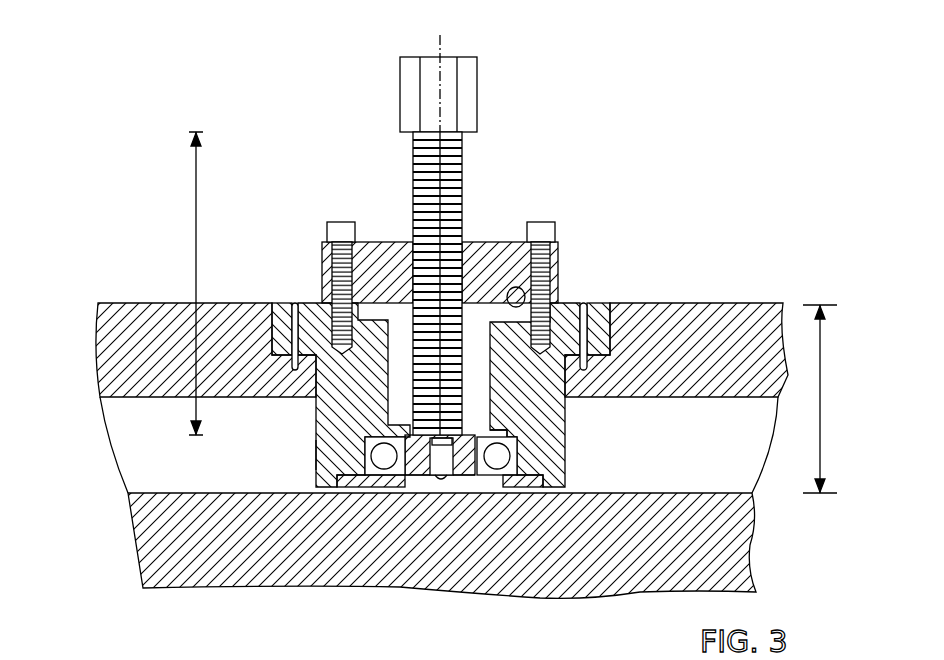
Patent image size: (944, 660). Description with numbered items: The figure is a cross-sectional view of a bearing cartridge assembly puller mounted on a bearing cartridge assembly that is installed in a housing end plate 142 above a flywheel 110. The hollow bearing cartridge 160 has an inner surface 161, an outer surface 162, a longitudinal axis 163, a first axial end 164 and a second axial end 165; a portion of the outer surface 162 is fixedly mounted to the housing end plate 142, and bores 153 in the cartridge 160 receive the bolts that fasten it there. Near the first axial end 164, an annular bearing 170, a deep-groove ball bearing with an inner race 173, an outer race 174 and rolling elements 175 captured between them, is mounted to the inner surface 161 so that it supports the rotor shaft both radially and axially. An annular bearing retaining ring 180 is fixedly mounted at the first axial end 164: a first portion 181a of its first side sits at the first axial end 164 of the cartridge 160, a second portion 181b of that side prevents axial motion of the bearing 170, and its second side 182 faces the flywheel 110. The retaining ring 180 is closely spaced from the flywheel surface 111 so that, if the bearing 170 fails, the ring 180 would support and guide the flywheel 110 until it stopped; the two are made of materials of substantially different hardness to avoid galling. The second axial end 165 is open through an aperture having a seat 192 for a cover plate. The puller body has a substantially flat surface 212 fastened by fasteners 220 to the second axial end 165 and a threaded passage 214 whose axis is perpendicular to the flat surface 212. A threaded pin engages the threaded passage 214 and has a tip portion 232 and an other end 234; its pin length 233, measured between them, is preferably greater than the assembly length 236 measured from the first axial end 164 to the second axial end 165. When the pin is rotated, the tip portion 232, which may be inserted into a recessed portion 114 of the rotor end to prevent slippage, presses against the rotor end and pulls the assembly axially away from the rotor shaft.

The flywheel 110 is at (740, 514).
The flywheel surface 111 is at (680, 488).
The recessed portion 114 is at (413, 477).
The housing end plate 142 is at (655, 303).
The bores 153 is at (296, 303).
The hollow bearing cartridge 160 is at (565, 400).
The inner surface 161 is at (388, 383).
The outer surface 162 is at (316, 453).
The longitudinal axis 163 is at (413, 227).
The first axial end 164 is at (337, 483).
The second axial end 165 is at (275, 303).
The annular bearing 170 is at (405, 478).
The inner race 173 is at (480, 478).
The outer race 174 is at (538, 413).
The rolling elements 175 is at (385, 462).
The annular bearing retaining ring 180 is at (548, 478).
The first portion of first side 181a is at (532, 473).
The second portion of first side 181b is at (488, 478).
The second side 182 is at (355, 483).
The seat 192 is at (525, 300).
The flat surface 212 is at (372, 312).
The threaded passage 214 is at (480, 252).
The fastener 220 is at (555, 232).
The tip portion 232 is at (441, 479).
The pin length 233 is at (193, 283).
The other end 234 is at (410, 134).
The assembly length 236 is at (818, 399).